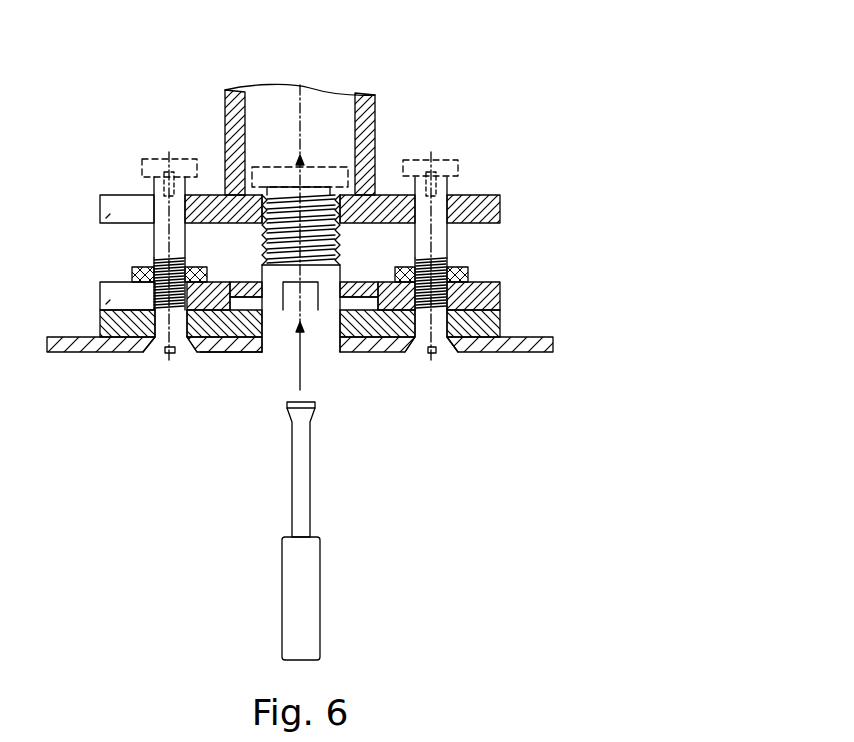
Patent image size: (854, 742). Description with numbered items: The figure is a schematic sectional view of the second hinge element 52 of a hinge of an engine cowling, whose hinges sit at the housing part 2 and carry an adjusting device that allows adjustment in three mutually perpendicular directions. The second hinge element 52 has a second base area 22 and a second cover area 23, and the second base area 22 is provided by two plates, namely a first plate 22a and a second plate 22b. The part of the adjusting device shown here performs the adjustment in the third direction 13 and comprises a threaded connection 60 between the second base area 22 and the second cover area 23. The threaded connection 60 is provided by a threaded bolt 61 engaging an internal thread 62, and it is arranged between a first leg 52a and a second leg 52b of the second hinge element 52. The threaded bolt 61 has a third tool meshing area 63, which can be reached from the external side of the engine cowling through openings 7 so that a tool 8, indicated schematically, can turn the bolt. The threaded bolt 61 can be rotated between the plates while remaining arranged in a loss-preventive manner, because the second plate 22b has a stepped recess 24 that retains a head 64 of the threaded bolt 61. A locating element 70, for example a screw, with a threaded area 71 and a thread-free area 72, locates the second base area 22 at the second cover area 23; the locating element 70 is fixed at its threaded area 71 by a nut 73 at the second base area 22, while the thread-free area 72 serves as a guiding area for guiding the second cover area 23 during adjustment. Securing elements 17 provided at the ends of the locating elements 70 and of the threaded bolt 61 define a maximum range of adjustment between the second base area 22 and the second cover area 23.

The housing part 2 is at (62, 347).
The openings 7 is at (268, 354).
The tool 8 is at (296, 592).
The third direction 13 is at (300, 162).
The securing elements 17 is at (148, 160).
The second base area 22 is at (323, 352).
The first plate 22a is at (477, 330).
The second plate 22b is at (395, 300).
The second cover area 23 is at (483, 210).
The stepped recess 24 is at (347, 305).
The second hinge element 52 is at (362, 108).
The first leg 52a is at (365, 95).
The second leg 52b is at (235, 100).
The threaded connection 60 is at (362, 274).
The threaded bolt 61 is at (337, 270).
The internal thread 62 is at (260, 213).
The third tool meshing area 63 is at (293, 300).
The head 64 is at (243, 303).
The locating element 70 is at (289, 196).
The threaded area 71 is at (152, 238).
The thread-free area 72 is at (153, 185).
The nut 73 is at (133, 275).